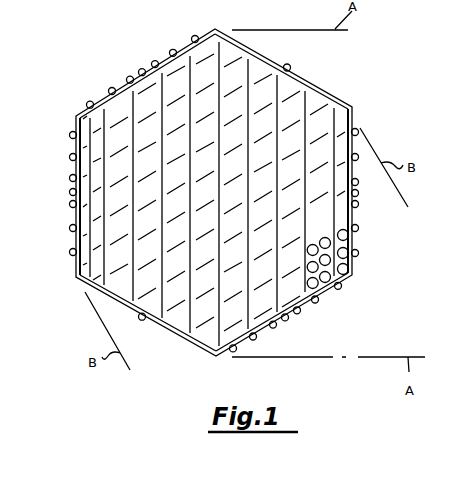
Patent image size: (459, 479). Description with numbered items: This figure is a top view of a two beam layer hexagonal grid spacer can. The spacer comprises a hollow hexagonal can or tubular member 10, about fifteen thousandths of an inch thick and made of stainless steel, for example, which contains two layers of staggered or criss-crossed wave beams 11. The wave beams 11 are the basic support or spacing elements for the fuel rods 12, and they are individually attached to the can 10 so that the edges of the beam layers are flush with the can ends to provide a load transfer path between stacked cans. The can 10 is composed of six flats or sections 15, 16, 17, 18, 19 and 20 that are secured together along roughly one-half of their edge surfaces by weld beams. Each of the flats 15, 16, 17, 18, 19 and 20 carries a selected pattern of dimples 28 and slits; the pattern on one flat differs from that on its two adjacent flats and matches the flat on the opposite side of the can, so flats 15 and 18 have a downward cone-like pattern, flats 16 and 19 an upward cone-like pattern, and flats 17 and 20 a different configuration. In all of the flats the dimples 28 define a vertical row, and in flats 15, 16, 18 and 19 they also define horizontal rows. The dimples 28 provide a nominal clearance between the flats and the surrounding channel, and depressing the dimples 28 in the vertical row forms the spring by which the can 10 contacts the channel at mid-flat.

The hexagonal can 10 is at (132, 64).
The wave beams 11 is at (305, 128).
The fuel rod 12 is at (350, 253).
The flat 15 is at (355, 215).
The flat 16 is at (325, 292).
The flat 17 is at (140, 316).
The flat 18 is at (75, 208).
The flat 19 is at (165, 60).
The flat 20 is at (265, 58).
The dimples 28 is at (72, 230).